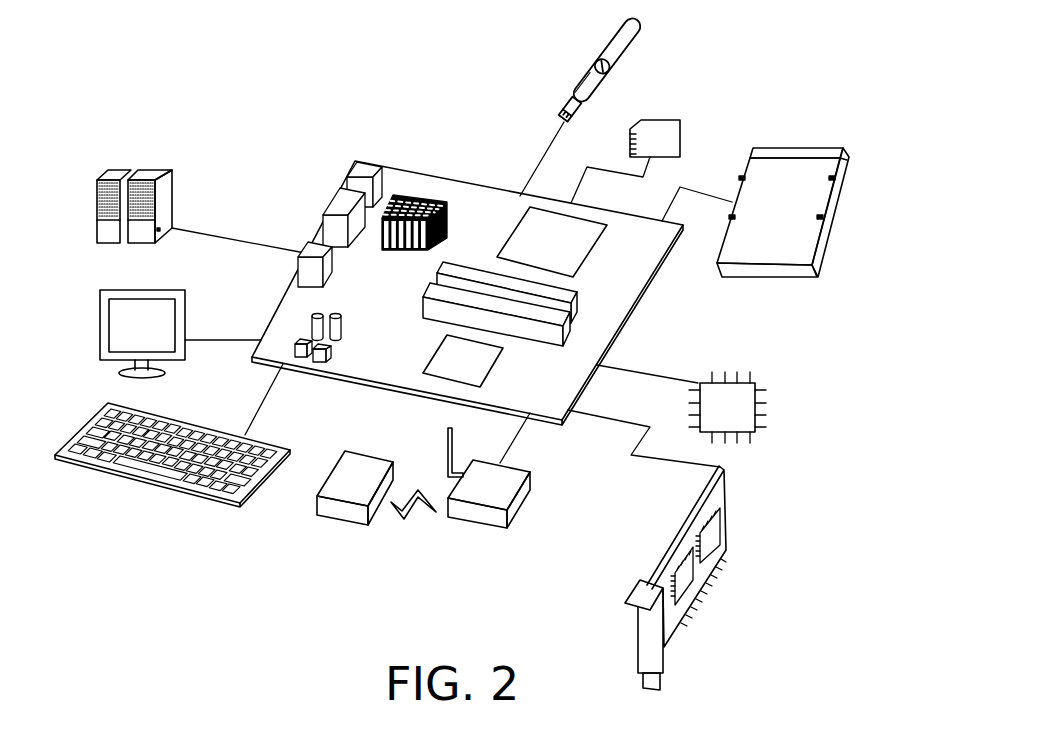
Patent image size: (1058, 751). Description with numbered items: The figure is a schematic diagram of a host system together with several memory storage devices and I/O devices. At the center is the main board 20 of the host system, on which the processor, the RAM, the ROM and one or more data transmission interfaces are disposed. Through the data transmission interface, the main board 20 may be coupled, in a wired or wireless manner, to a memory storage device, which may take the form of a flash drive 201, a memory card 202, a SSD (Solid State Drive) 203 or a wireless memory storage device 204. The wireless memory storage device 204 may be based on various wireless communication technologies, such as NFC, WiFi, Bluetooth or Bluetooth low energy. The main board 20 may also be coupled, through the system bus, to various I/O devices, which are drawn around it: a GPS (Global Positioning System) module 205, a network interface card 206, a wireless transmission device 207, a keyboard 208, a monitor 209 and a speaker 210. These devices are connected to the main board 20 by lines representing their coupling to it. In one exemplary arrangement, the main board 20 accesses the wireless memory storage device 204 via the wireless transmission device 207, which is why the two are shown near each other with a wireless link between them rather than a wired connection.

The main board 20 is at (467, 202).
The flash drive 201 is at (590, 60).
The memory card 202 is at (681, 130).
The SSD (Solid State Drive) 203 is at (800, 147).
The wireless memory storage device 204 is at (332, 463).
The GPS (Global Positioning System) module 205 is at (760, 403).
The network interface card 206 is at (725, 525).
The wireless transmission device 207 is at (525, 508).
The keyboard 208 is at (177, 490).
The monitor 209 is at (99, 343).
The speaker 210 is at (96, 232).